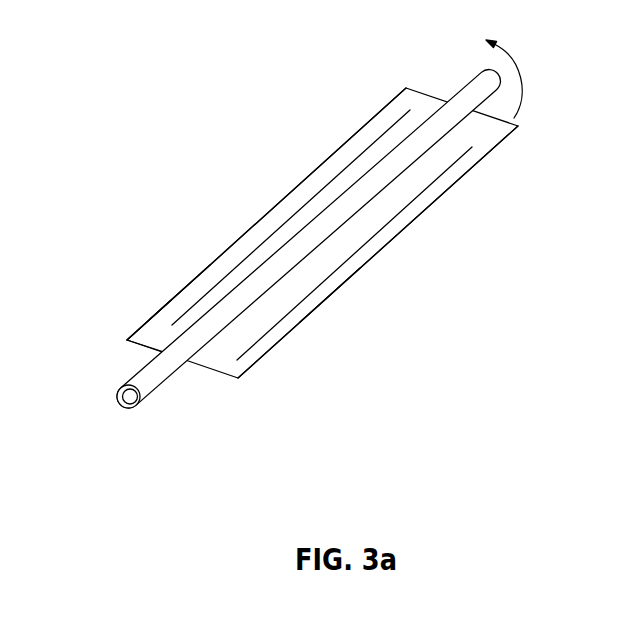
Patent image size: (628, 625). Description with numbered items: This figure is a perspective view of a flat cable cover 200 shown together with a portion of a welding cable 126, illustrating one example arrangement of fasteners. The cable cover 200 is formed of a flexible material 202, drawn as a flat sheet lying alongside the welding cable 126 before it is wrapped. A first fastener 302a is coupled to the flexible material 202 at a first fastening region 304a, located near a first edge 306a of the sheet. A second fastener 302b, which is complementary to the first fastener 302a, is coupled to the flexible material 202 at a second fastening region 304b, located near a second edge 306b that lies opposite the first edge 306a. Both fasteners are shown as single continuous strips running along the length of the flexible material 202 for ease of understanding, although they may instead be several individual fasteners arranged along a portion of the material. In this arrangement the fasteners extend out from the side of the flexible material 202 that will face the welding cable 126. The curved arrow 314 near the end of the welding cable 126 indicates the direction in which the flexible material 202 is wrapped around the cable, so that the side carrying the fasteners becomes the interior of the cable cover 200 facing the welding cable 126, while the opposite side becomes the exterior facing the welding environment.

The cable cover 200 is at (333, 128).
The flexible material 202 is at (130, 328).
The first fastener 302a is at (242, 241).
The second fastener 302b is at (437, 185).
The first fastening region 304a is at (293, 200).
The second fastening region 304b is at (394, 232).
The first edge 306a is at (182, 284).
The second edge 306b is at (331, 301).
The welding cable 126 is at (162, 388).
The arrow 314 is at (521, 79).